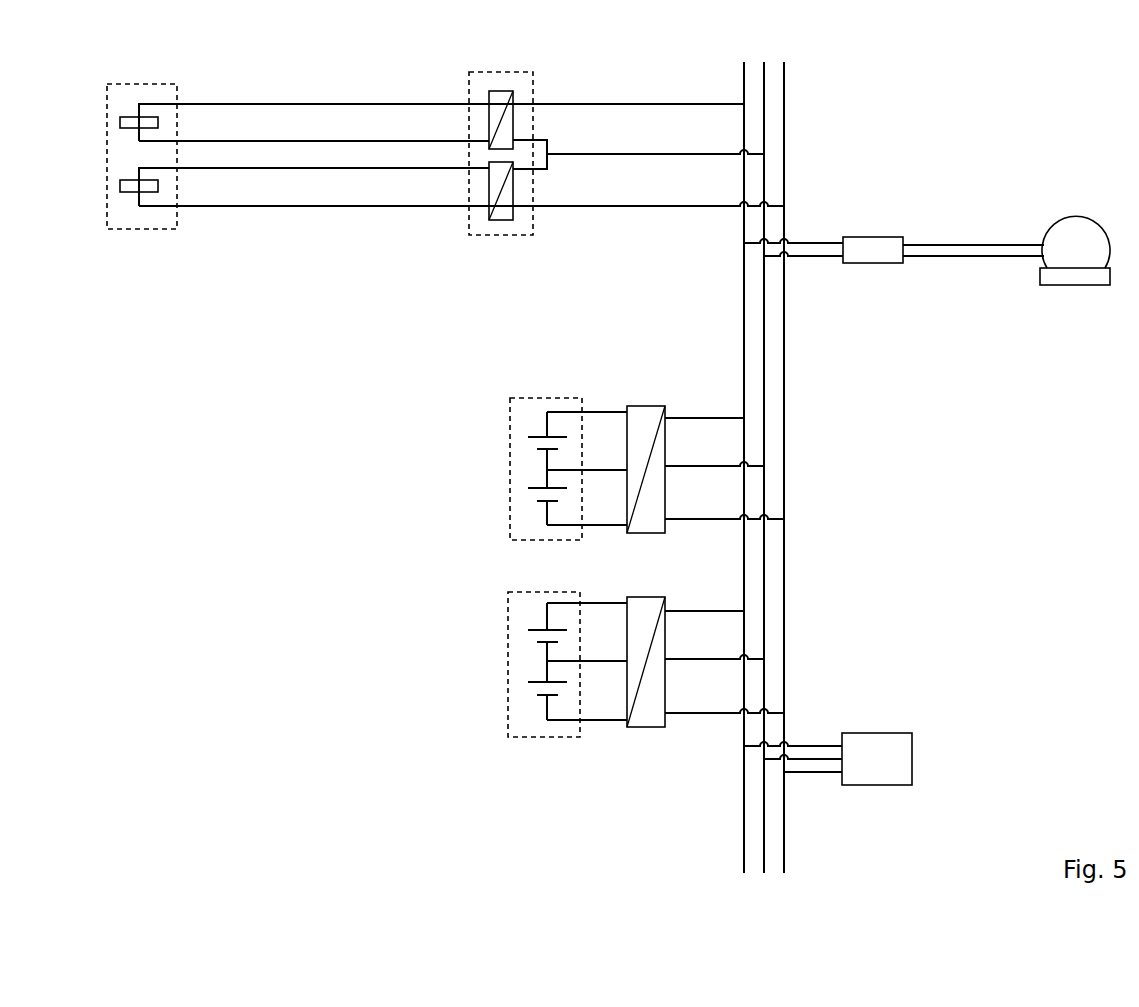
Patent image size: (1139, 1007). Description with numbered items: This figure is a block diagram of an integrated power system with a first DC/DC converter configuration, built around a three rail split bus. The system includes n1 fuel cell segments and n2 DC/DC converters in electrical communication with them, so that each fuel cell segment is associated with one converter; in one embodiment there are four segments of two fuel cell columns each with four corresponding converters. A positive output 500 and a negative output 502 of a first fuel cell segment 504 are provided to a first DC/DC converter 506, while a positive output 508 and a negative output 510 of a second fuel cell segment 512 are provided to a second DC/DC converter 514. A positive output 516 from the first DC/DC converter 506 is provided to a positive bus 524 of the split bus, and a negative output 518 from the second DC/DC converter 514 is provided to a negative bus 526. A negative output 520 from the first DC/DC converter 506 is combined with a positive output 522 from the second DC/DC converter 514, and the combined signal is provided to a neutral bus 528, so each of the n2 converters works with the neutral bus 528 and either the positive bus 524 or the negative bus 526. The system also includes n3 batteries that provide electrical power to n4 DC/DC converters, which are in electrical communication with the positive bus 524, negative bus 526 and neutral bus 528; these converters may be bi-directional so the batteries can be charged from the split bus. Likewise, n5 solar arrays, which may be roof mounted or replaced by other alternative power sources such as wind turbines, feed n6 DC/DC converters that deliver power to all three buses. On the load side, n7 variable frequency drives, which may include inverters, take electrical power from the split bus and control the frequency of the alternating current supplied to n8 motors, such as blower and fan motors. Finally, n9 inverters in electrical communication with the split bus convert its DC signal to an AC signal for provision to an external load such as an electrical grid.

The positive output 500 is at (232, 103).
The negative output 502 is at (303, 140).
The first fuel cell segment 504 is at (127, 118).
The first DC/DC converter 506 is at (488, 93).
The positive output 508 is at (250, 168).
The negative output 510 is at (332, 207).
The second fuel cell segment 512 is at (122, 192).
The second DC/DC converter 514 is at (497, 217).
The positive output 516 is at (608, 102).
The negative output 518 is at (617, 208).
The negative output 520 is at (547, 137).
The positive output 522 is at (548, 170).
The positive bus 524 is at (743, 78).
The negative bus 526 is at (782, 110).
The neutral bus 528 is at (765, 87).
The fuel cell segments n1 is at (158, 228).
The DC/DC converters n2 is at (517, 233).
The batteries n3 is at (510, 430).
The DC/DC converters n4 is at (640, 406).
The solar arrays n5 is at (525, 738).
The DC/DC converters n6 is at (643, 727).
The variable frequency drives n7 is at (867, 235).
The motors n8 is at (1080, 217).
The inverters n9 is at (897, 733).